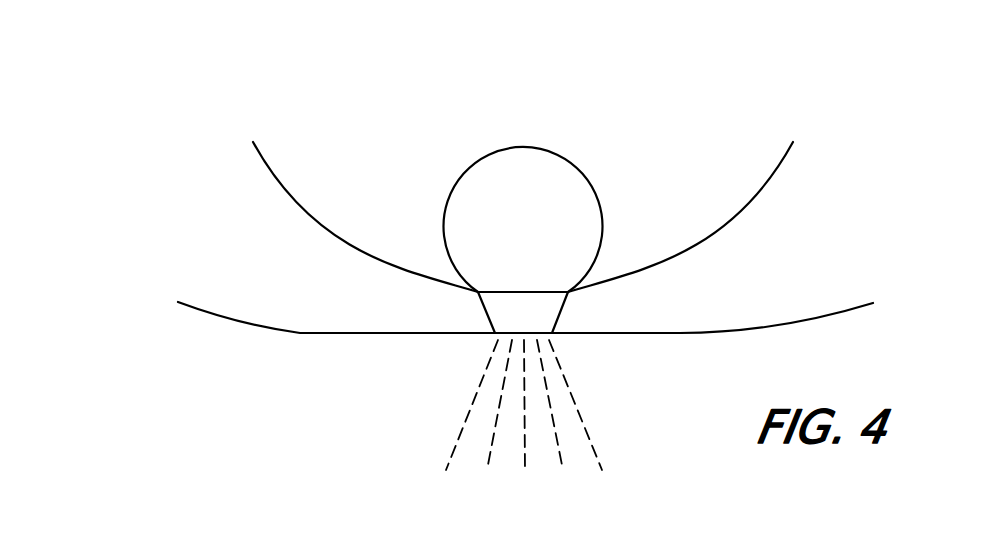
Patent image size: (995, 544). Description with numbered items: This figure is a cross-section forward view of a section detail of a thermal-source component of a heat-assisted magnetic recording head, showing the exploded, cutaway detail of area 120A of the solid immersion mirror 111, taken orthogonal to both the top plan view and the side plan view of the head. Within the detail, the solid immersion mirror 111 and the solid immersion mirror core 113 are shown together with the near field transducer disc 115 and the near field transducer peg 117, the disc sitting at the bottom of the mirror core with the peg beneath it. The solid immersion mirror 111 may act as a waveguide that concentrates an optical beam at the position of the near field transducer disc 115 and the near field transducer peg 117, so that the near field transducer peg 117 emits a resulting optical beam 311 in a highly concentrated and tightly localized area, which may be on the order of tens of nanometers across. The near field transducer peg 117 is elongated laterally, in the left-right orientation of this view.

The section detail area 120A is at (148, 147).
The solid immersion mirror 111 is at (267, 327).
The solid immersion mirror core 113 is at (355, 249).
The near field transducer disc 115 is at (468, 168).
The near field transducer peg 117 is at (560, 311).
The resulting optical beam 311 is at (462, 410).